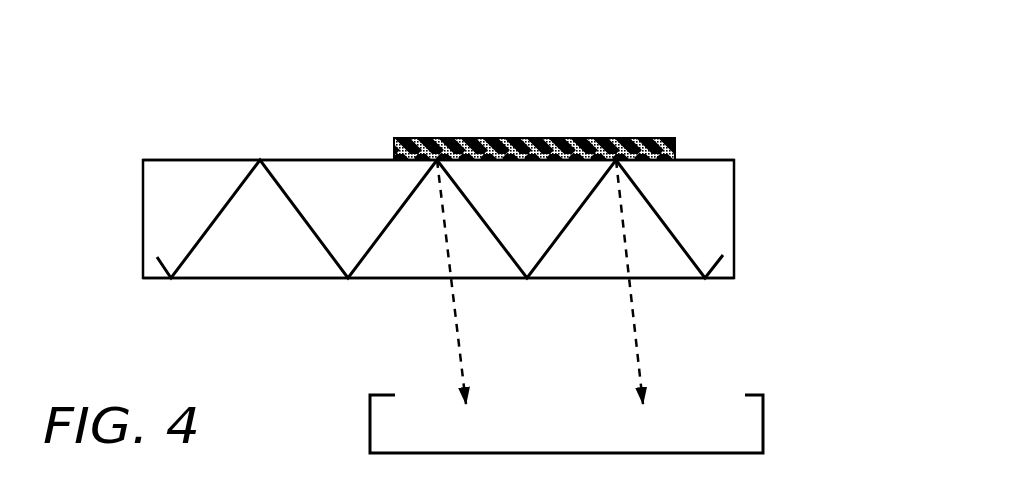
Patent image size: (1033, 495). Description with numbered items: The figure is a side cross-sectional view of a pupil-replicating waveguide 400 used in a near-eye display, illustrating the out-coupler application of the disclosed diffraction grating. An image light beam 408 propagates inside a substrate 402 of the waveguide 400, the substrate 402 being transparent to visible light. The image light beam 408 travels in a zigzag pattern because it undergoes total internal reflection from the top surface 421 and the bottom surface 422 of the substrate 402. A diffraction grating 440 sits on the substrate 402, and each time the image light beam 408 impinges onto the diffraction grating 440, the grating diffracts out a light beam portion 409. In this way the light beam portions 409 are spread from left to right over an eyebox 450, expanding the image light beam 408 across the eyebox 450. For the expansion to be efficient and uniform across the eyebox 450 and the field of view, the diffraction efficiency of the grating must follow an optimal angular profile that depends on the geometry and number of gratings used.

The pupil-replicating waveguide 400 is at (805, 212).
The substrate 402 is at (163, 187).
The top surface 421 is at (210, 160).
The bottom surface 422 is at (263, 278).
The image light beam 408 is at (283, 185).
The diffraction grating 440 is at (672, 122).
The light beam portion 409 is at (462, 353).
The eyebox 450 is at (764, 432).